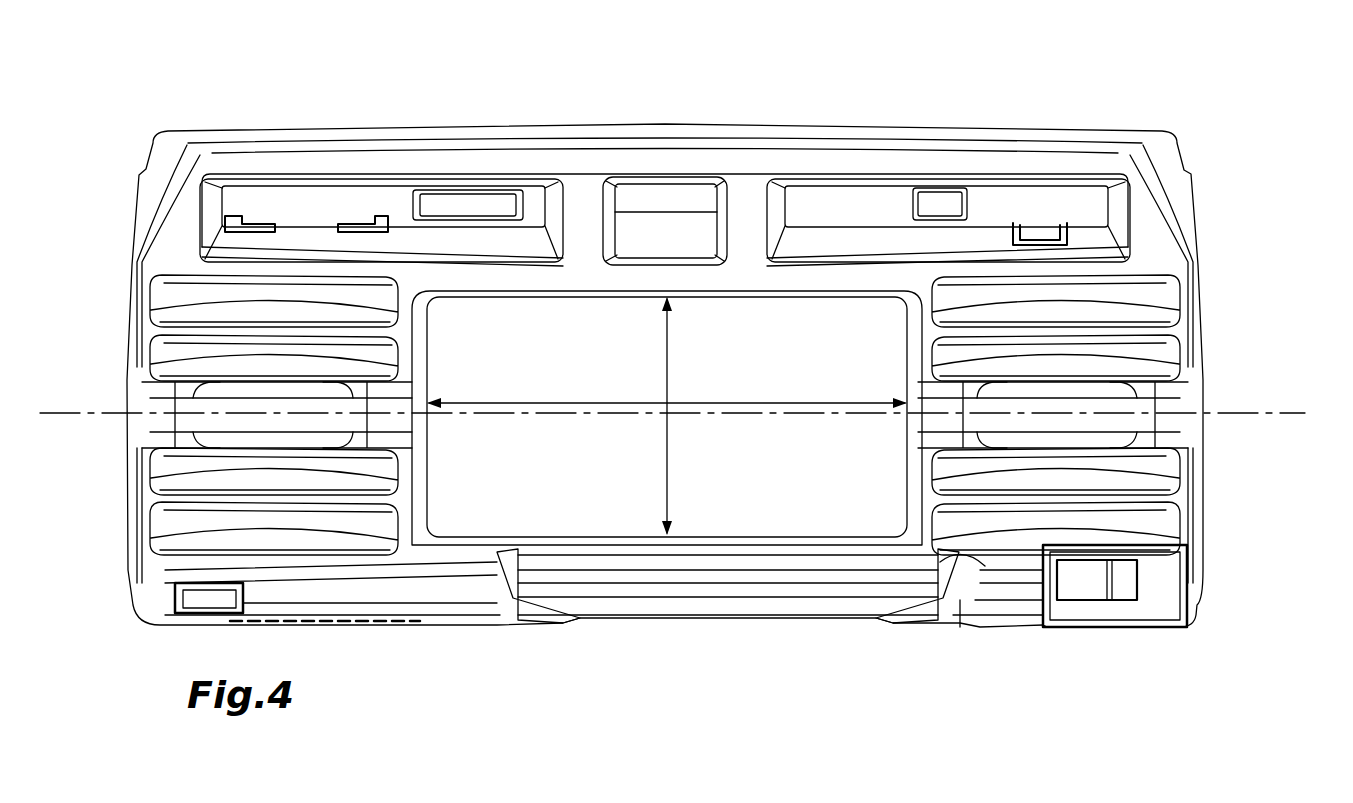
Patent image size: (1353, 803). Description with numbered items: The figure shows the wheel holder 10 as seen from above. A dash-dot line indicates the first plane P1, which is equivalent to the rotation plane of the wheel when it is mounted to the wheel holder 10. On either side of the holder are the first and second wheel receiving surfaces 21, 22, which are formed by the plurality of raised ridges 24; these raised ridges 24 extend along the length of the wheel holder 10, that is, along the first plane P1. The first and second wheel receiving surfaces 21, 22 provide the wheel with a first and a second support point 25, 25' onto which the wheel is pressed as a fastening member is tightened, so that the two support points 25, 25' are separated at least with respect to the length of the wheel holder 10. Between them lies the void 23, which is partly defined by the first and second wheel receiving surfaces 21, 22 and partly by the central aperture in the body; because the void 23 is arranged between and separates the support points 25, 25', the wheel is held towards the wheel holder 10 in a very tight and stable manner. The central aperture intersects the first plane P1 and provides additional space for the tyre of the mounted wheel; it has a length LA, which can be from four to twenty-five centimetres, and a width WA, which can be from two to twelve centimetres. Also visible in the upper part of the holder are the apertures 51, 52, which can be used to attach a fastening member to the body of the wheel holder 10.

The wheel holder 10 is at (1155, 88).
The first wheel receiving surface 21 is at (243, 318).
The second wheel receiving surface 22 is at (1137, 283).
The void 23 is at (510, 325).
The raised ridges 24 is at (198, 365).
The first support point 25 is at (153, 602).
The second support point 25' is at (1048, 621).
The aperture 51 is at (312, 198).
The aperture 52 is at (1018, 206).
The width of the aperture WA is at (667, 377).
The length of the aperture LA is at (750, 403).
The first plane P1 is at (1305, 413).